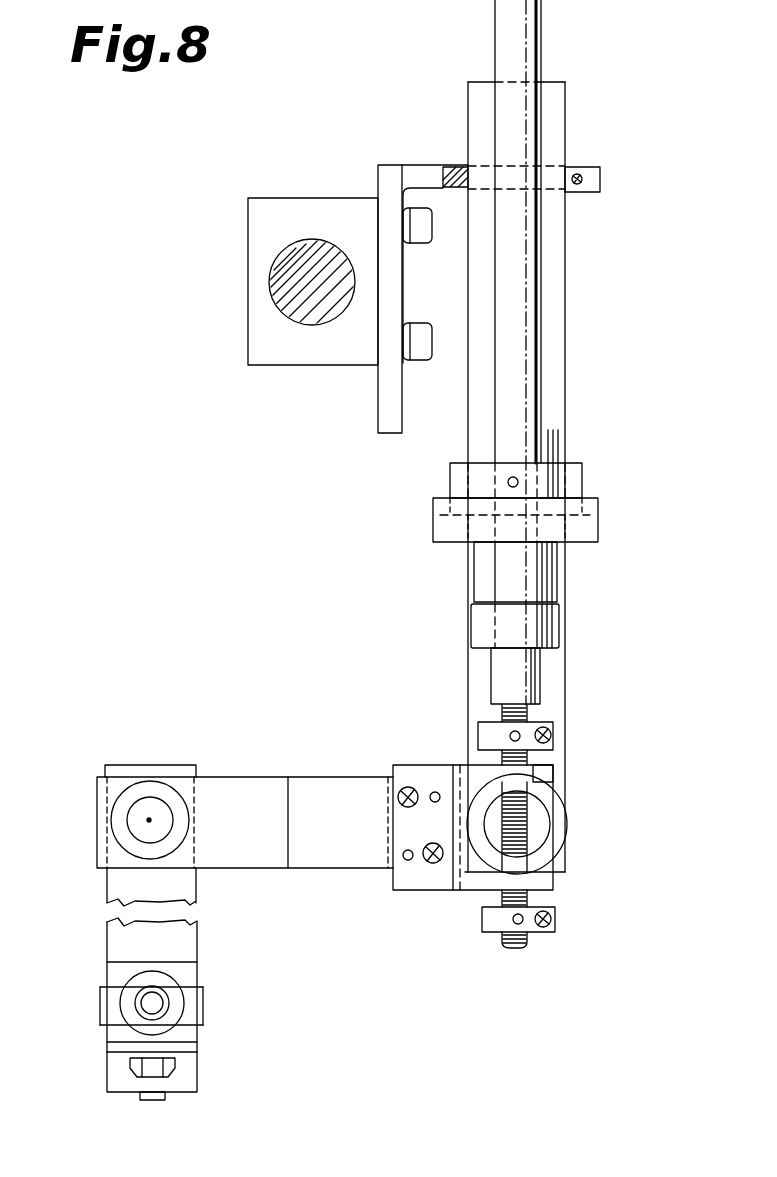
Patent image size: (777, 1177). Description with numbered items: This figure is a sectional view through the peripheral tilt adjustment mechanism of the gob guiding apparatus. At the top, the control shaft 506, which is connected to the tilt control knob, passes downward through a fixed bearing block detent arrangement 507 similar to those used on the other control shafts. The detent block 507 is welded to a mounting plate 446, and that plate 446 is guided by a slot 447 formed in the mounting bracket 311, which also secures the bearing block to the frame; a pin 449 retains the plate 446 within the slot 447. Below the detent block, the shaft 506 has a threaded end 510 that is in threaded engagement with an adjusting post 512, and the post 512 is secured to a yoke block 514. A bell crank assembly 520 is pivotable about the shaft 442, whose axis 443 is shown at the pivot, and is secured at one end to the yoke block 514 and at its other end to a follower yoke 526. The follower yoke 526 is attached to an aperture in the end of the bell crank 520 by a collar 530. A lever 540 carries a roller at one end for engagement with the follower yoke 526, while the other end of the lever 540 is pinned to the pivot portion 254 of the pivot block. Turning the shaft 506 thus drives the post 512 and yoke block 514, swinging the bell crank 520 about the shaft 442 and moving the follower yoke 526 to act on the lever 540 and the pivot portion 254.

The shaft 506 is at (528, 42).
The slot 447 is at (468, 167).
The pin 449 is at (578, 172).
The mounting bracket 311 is at (600, 179).
The mounting plate 446 is at (566, 358).
The fixed bearing block detent arrangement 507 is at (603, 521).
The axis 443 is at (150, 818).
The shaft 442 is at (133, 818).
The bell crank assembly 520 is at (368, 736).
The yoke block 514 is at (553, 780).
The adjusting post 512 is at (560, 832).
The threaded end 510 is at (530, 904).
The collar 530 is at (165, 985).
The follower yoke 526 is at (203, 1005).
The lever 540 is at (197, 1048).
The pivot portion 254 is at (166, 1098).